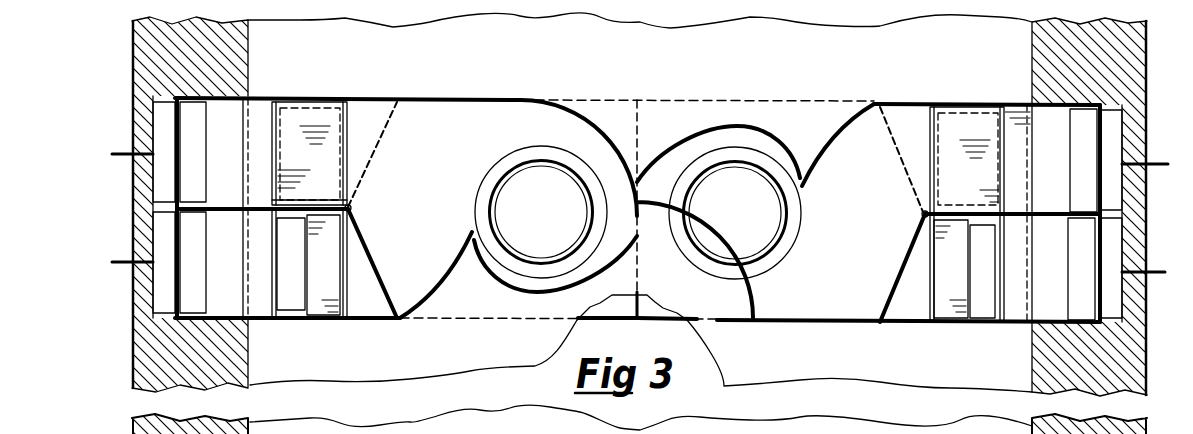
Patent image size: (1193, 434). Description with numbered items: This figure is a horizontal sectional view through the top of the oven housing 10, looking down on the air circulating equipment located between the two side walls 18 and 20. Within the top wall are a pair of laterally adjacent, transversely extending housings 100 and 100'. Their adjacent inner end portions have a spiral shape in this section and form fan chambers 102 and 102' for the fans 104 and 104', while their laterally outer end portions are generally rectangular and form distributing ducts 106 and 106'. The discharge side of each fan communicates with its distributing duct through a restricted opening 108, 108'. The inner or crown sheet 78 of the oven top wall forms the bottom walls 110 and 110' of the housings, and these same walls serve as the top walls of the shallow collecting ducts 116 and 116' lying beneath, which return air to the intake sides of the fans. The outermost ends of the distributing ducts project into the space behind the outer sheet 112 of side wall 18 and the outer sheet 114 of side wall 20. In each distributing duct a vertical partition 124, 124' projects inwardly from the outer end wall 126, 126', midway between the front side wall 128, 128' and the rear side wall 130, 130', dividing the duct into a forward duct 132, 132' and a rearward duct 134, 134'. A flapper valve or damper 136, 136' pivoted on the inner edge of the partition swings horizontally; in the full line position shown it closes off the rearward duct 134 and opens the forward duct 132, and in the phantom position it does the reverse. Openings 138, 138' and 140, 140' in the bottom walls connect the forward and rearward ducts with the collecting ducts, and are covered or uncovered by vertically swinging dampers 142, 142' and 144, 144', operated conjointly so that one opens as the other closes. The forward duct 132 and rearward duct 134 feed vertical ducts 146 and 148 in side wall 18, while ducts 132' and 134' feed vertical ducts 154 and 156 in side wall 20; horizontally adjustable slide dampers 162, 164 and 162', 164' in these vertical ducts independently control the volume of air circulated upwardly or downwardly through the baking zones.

The housing 10 is at (131, 374).
The side wall 18 is at (130, 67).
The side wall 20 is at (1147, 90).
The crown sheet 78 is at (611, 73).
The housing 100 is at (524, 183).
The housing 100' is at (750, 185).
The fan chamber 102 is at (637, 186).
The fan chamber 102' is at (718, 117).
The fan 104 is at (541, 165).
The fan 104' is at (735, 165).
The distributing duct 106 is at (348, 74).
The distributing duct 106' is at (979, 76).
The restricted opening 108 is at (518, 256).
The restricted opening 108' is at (838, 162).
The bottom wall 110 is at (435, 138).
The bottom wall 110' is at (825, 270).
The outer sheet 112 is at (131, 313).
The outer sheet 114 is at (1157, 336).
The collecting duct 116 is at (601, 324).
The collecting duct 116' is at (667, 325).
The partition 124 is at (206, 241).
The partition 124' is at (1054, 197).
The outer end wall 126 is at (120, 208).
The outer end wall 126' is at (1141, 213).
The front side wall 128 is at (268, 183).
The front side wall 128' is at (1006, 187).
The rear side wall 130 is at (307, 288).
The rear side wall 130' is at (967, 315).
The forward duct 132 is at (309, 126).
The forward duct 132' is at (980, 133).
The rearward duct 134 is at (271, 310).
The rearward duct 134' is at (1007, 293).
The flapper valve or damper 136 is at (375, 261).
The flapper valve or damper 136' is at (896, 266).
The opening 138 is at (359, 127).
The opening 138' is at (913, 132).
The opening 140 is at (309, 292).
The opening 140' is at (967, 299).
The flapper valve or damper 142 is at (271, 154).
The flapper valve or damper 142' is at (1001, 159).
The flapper valve or damper 144 is at (271, 265).
The flapper valve or damper 144' is at (999, 269).
The vertical duct 146 is at (219, 126).
The vertical duct 148 is at (213, 250).
The vertical duct 154 is at (1058, 133).
The vertical duct 156 is at (1057, 278).
The slide damper 162 is at (119, 152).
The slide damper 162' is at (1138, 160).
The slide damper 164 is at (119, 262).
The slide damper 164' is at (1142, 268).